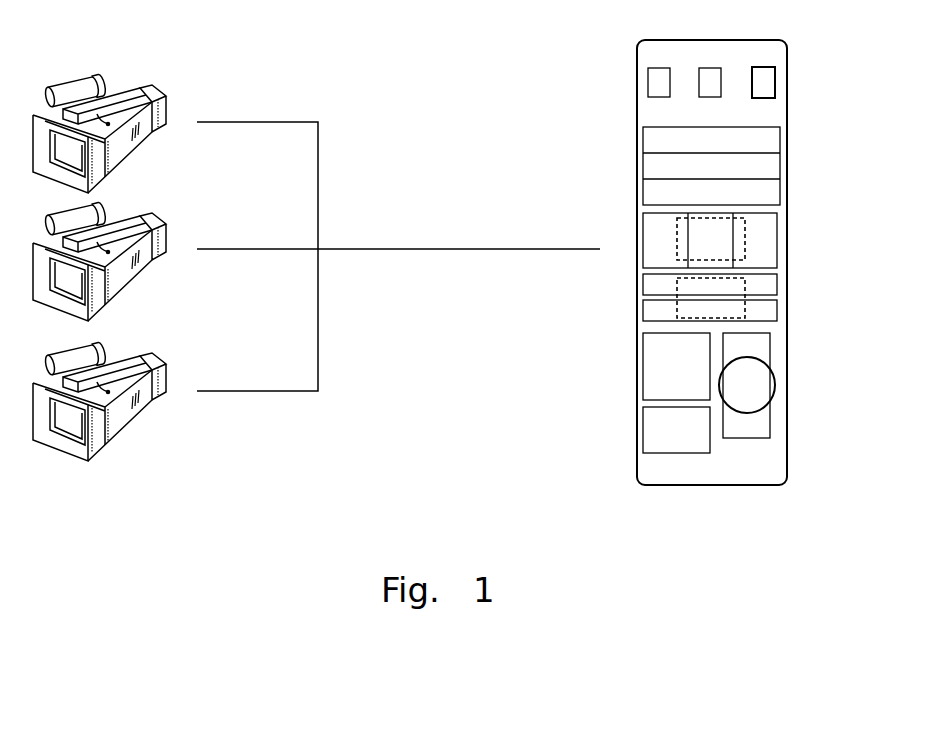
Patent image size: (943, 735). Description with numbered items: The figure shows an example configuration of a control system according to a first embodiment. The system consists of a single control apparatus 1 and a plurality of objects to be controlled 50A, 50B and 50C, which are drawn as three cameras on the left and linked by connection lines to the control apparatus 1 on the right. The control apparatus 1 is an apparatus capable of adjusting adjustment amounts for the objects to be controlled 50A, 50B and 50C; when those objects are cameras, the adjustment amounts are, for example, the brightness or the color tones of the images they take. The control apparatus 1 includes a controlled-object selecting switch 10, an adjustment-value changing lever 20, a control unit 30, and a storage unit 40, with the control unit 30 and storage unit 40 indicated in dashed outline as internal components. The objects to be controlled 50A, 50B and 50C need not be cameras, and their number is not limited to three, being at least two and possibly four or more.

The control apparatus 1 is at (782, 40).
The controlled-object selecting switch 10 is at (768, 97).
The adjustment-value changing lever 20 is at (775, 383).
The control unit 30 is at (745, 238).
The storage unit 40 is at (745, 287).
The object to be controlled 50A is at (166, 97).
The object to be controlled 50B is at (166, 225).
The object to be controlled 50C is at (166, 367).